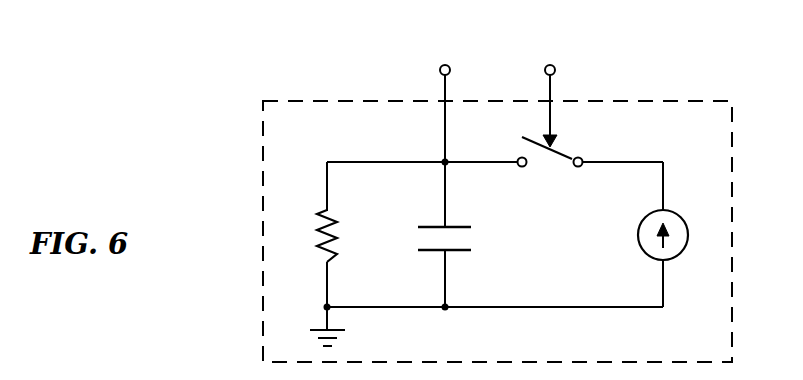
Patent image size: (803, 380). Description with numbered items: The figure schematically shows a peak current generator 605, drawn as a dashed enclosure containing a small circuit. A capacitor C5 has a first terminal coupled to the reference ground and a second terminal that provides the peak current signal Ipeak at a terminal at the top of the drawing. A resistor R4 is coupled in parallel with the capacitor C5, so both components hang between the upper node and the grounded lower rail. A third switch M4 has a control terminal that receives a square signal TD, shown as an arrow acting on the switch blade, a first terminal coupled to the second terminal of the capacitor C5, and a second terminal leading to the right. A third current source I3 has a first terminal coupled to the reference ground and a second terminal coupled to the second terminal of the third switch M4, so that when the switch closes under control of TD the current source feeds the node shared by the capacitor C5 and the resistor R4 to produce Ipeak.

The peak current generator 605 is at (299, 61).
The peak current signal Ipeak is at (438, 57).
The square signal TD is at (547, 92).
The resistor R4 is at (307, 236).
The capacitor C5 is at (462, 239).
The third switch M4 is at (550, 168).
The third current source I3 is at (677, 235).